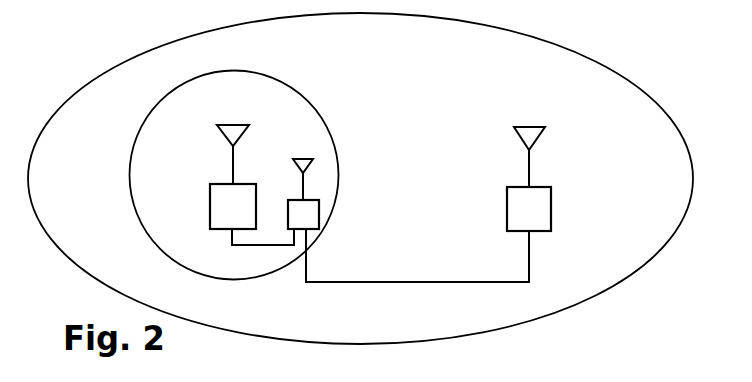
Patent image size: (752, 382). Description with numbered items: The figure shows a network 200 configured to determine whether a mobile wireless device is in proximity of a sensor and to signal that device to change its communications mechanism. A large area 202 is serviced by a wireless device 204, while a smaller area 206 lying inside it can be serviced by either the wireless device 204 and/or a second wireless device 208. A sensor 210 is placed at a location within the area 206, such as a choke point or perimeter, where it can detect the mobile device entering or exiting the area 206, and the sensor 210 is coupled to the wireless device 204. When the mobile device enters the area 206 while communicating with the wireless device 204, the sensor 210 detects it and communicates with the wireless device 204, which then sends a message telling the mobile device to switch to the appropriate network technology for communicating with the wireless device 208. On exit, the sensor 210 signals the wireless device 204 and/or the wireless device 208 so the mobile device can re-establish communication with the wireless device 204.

The wireless communication system 200 is at (84, 48).
The area 202 is at (604, 68).
The wireless device 204 is at (551, 208).
The area 206 is at (131, 153).
The wireless device 208 is at (210, 205).
The sensor 210 is at (319, 212).